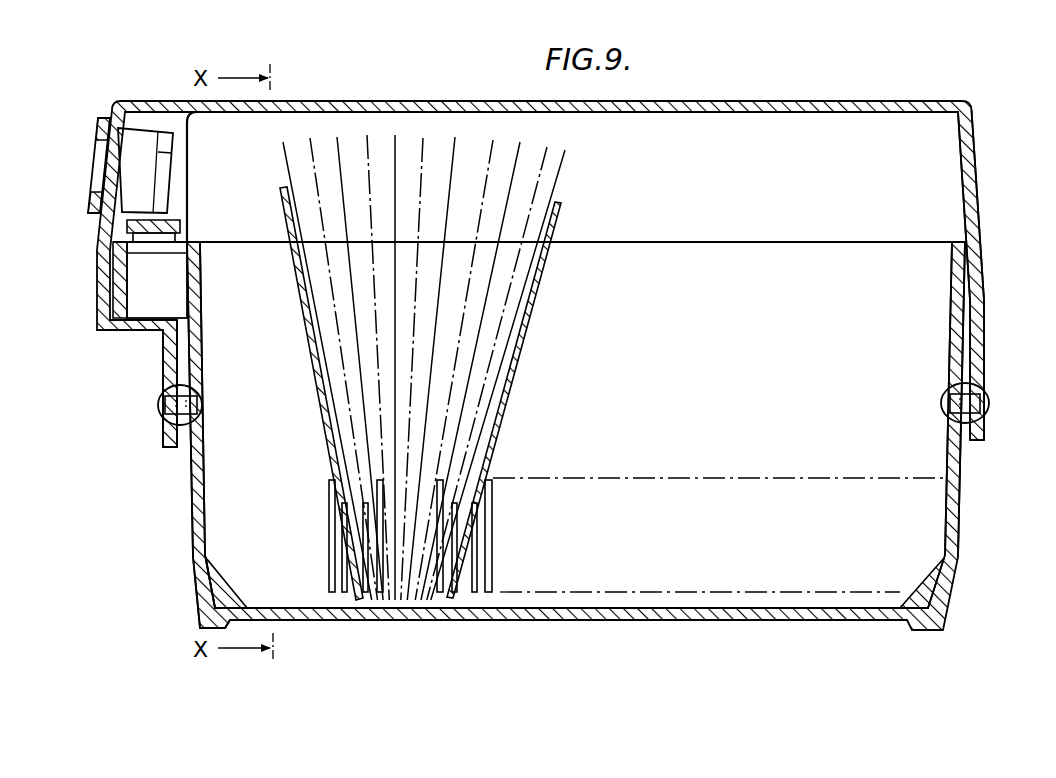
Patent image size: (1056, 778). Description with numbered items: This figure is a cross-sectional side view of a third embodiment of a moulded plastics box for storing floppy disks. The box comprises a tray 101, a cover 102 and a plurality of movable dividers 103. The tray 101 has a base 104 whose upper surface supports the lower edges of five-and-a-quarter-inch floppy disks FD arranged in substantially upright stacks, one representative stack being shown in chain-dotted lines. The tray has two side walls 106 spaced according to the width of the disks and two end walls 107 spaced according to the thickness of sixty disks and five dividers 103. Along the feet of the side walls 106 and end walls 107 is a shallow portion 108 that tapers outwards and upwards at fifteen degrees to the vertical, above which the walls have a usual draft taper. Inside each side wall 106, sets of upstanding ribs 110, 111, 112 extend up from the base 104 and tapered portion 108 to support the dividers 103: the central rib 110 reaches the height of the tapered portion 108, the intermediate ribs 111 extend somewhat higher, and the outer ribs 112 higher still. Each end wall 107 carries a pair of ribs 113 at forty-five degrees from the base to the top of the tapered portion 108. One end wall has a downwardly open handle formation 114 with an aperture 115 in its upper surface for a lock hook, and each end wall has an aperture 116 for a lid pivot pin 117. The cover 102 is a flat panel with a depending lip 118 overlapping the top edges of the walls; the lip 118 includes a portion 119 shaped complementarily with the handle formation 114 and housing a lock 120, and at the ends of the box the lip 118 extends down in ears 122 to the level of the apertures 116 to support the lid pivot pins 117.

The tray 101 is at (736, 623).
The cover 102 is at (704, 103).
The movable dividers 103 is at (300, 308).
The base 104 is at (592, 618).
The side walls 106 is at (673, 548).
The end walls 107 is at (195, 515).
The shallow tapered portion 108 is at (193, 578).
The central rib 110 is at (460, 596).
The intermediate ribs 111 is at (475, 594).
The outer ribs 112 is at (505, 590).
The ribs 113 is at (227, 597).
The handle formation 114 is at (145, 307).
The aperture for lock hook 115 is at (137, 243).
The aperture for lid pivot pin 116 is at (192, 453).
The lid pivot pin 117 is at (197, 405).
The depending lip 118 is at (858, 138).
The lip portion 119 is at (97, 280).
The lock 120 is at (100, 153).
The ears 122 is at (987, 274).
The floppy disks FD is at (425, 148).